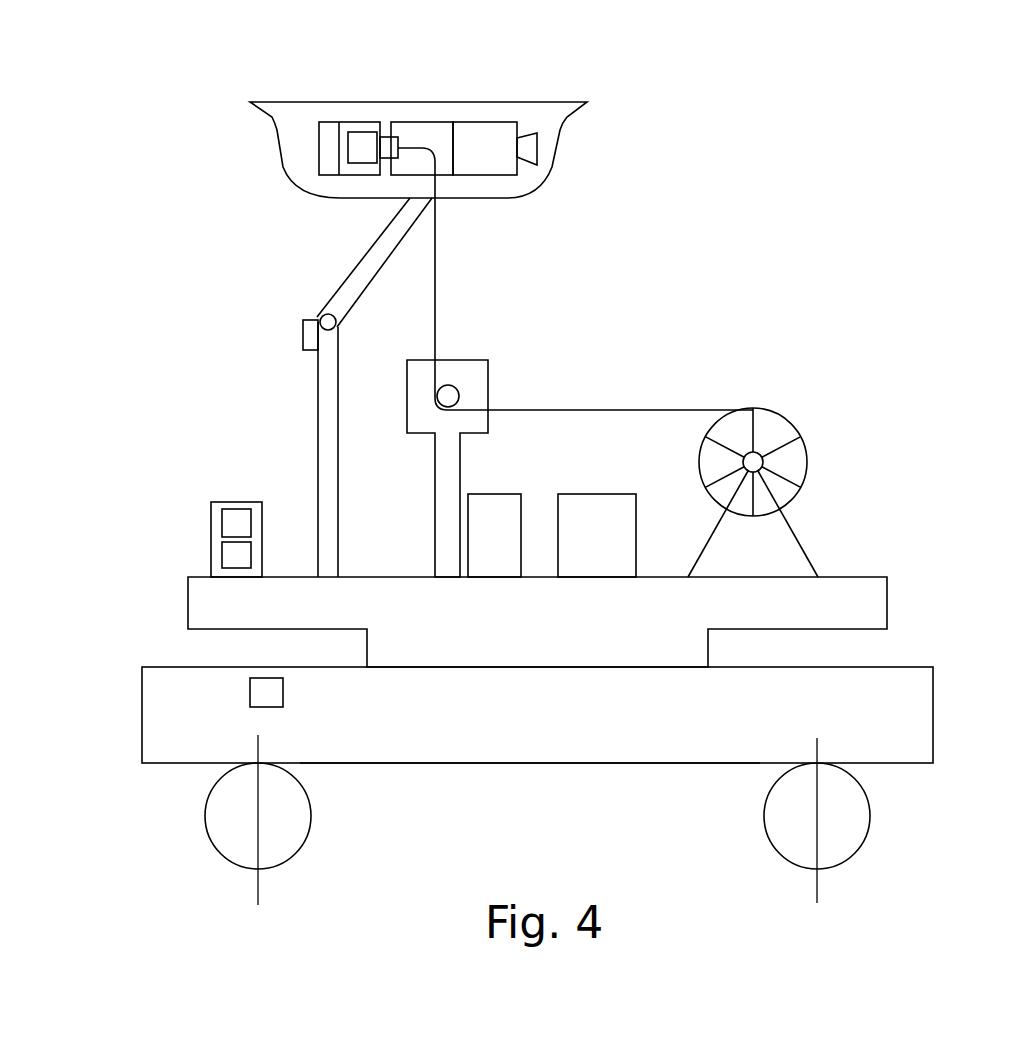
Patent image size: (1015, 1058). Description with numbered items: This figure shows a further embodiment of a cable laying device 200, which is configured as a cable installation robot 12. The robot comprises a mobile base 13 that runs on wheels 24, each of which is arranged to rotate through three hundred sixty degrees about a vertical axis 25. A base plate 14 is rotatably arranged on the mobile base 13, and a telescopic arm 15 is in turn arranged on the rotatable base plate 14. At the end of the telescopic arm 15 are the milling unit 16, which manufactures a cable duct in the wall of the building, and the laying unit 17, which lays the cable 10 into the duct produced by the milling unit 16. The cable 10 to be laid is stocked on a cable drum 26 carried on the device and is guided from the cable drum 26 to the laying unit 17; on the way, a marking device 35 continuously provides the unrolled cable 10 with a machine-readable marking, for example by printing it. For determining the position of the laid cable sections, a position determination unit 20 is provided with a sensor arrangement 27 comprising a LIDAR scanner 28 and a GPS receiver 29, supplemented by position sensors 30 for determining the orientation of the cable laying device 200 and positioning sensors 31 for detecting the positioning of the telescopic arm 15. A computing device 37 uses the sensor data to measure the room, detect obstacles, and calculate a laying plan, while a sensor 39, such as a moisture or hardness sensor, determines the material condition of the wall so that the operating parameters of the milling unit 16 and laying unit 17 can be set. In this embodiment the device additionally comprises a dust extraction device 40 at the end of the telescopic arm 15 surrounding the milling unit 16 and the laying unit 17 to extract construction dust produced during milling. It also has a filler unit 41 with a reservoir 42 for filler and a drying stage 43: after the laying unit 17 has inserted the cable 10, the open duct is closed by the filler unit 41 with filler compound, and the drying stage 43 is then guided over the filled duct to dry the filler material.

The cable laying device 200 is at (50, 199).
The cable 10 is at (590, 408).
The cable installation robot 12 is at (142, 685).
The mobile base 13 is at (528, 763).
The base plate 14 is at (887, 600).
The telescopic arm 15 is at (318, 388).
The milling unit 16 is at (485, 122).
The laying unit 17 is at (425, 122).
The position determination unit 20 is at (601, 560).
The wheels 24 is at (207, 802).
The vertical axis 25 is at (258, 878).
The cable drum 26 is at (808, 465).
The sensor arrangement 27 is at (211, 512).
The LIDAR scanner 28 is at (222, 523).
The GPS receiver 29 is at (222, 555).
The position sensors 30 is at (250, 683).
The positioning sensors 31 is at (308, 332).
The marking device 35 is at (407, 425).
The computing device 37 is at (497, 560).
The sensor 39 is at (523, 138).
The dust extraction device 40 is at (550, 137).
The filler unit 41 is at (363, 122).
The reservoir 42 is at (365, 155).
The drying stage 43 is at (330, 122).